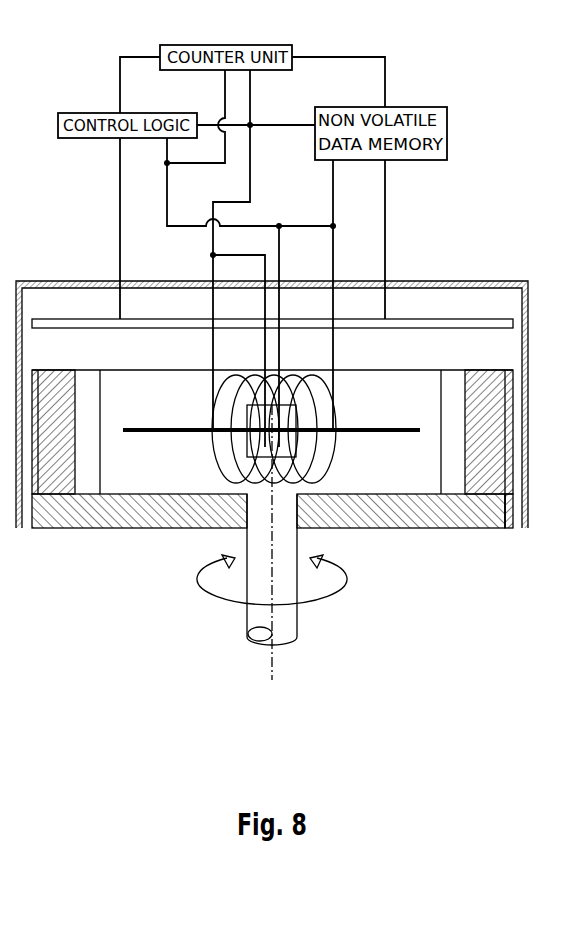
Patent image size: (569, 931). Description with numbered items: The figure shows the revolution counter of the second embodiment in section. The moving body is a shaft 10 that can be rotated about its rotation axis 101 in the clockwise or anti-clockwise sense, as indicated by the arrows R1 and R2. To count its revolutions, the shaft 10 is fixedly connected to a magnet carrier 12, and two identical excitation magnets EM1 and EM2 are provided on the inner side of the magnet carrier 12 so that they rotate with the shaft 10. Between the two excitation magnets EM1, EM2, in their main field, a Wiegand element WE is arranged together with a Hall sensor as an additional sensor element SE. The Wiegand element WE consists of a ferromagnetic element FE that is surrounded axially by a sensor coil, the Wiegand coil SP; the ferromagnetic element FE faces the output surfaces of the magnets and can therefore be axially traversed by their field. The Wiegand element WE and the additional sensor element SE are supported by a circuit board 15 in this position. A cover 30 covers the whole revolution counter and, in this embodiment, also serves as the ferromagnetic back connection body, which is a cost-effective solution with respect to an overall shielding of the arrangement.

The cover 30 is at (478, 281).
The circuit board 15 is at (175, 323).
The Wiegand element WE is at (340, 463).
The excitation magnet EM1 is at (58, 380).
The excitation magnet EM2 is at (490, 468).
The magnet carrier 12 is at (120, 515).
The shaft 10 is at (285, 615).
The rotation axis 101 is at (272, 653).
The arrow R1 is at (256, 580).
The arrow R2 is at (343, 573).
The Wiegand coil SP is at (310, 417).
The additional sensor element SE is at (281, 412).
The ferromagnetic element FE is at (385, 433).